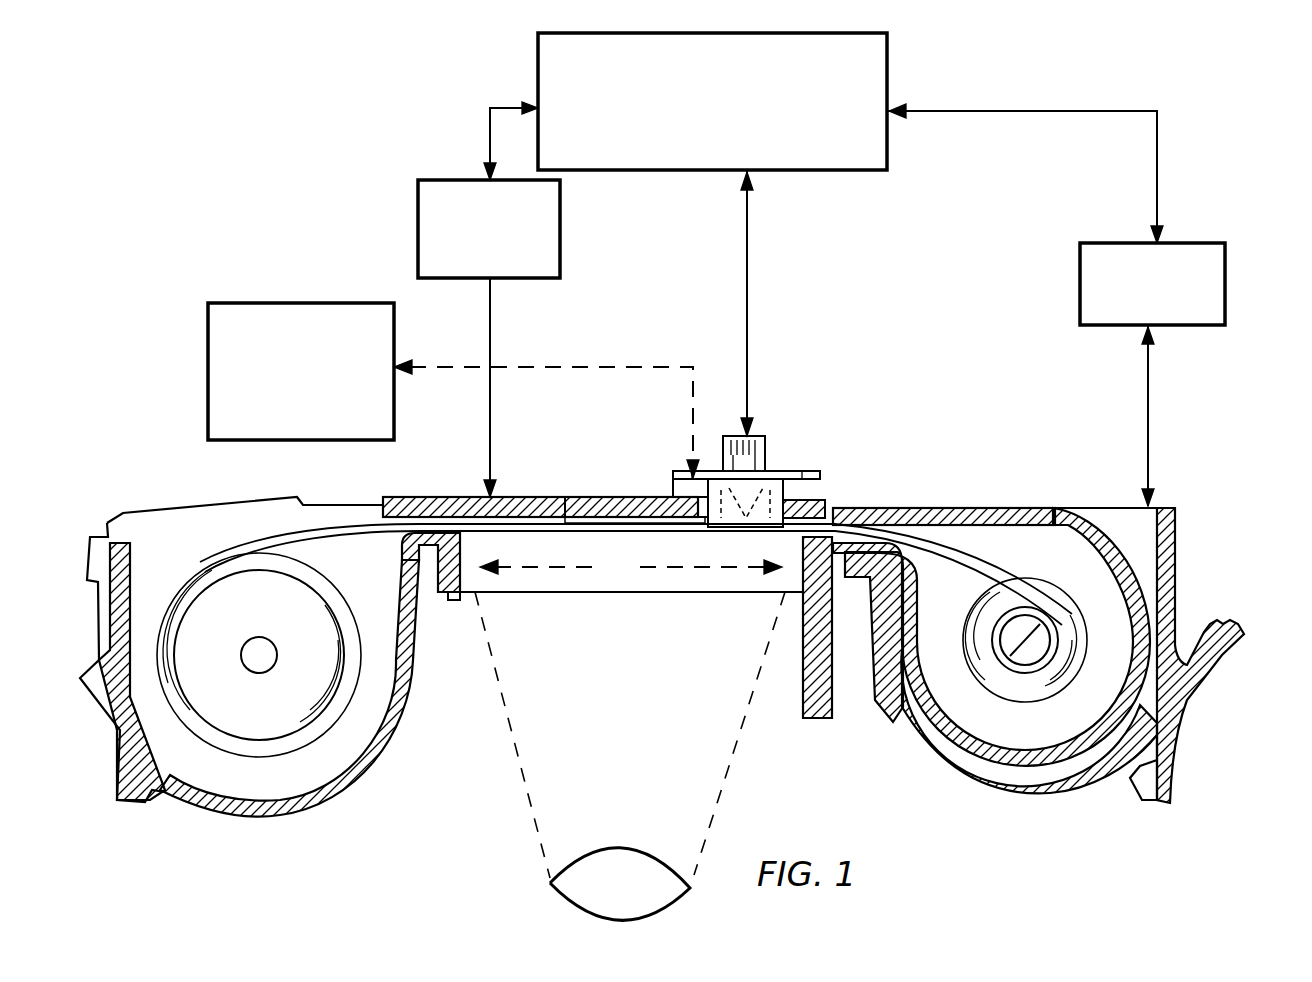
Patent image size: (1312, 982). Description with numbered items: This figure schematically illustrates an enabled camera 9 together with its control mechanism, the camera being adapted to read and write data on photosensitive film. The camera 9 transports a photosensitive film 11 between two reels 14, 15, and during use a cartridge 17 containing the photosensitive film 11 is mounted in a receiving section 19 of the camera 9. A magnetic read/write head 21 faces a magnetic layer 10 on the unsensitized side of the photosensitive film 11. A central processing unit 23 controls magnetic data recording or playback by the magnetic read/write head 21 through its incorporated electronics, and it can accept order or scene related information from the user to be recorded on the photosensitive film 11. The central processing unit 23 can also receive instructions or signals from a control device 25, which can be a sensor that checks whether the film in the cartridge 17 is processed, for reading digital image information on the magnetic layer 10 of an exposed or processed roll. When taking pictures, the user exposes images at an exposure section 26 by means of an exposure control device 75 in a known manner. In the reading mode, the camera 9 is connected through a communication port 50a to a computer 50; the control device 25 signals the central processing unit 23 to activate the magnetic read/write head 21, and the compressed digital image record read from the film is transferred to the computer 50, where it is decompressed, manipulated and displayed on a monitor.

The enabled camera 9 is at (1210, 479).
The magnetic layer 10 is at (566, 497).
The photosensitive film 11 is at (975, 555).
The reel 14 is at (977, 668).
The reel 15 is at (330, 728).
The cartridge 17 is at (1053, 748).
The receiving section 19 is at (1150, 568).
The magnetic read/write head 21 is at (790, 492).
The central processing unit 23 is at (880, 70).
The control device 25 is at (1225, 296).
The exposure section 26 is at (631, 574).
The computer 50 is at (336, 303).
The communication port 50a is at (673, 480).
The exposure control device 75 is at (455, 180).